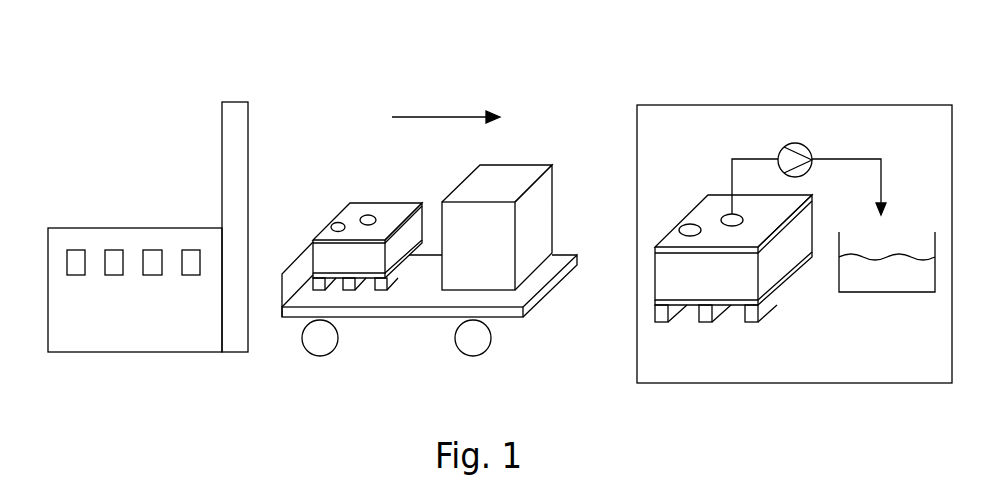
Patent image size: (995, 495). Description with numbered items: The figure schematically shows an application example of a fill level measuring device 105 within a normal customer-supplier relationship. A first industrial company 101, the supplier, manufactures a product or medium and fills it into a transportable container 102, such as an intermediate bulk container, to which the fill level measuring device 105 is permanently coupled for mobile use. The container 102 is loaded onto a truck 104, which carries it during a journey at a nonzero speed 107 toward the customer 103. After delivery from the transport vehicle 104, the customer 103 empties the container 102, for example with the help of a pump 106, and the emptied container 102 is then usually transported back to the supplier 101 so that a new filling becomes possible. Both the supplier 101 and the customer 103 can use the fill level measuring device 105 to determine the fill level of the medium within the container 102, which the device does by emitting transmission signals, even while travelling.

The first industrial company 101 is at (152, 154).
The transportable container 102 is at (358, 202).
The customer 103 is at (862, 105).
The truck 104 is at (553, 200).
The fill level measuring device 105 is at (340, 224).
The pump 106 is at (784, 143).
The nonzero speed 107 is at (417, 112).